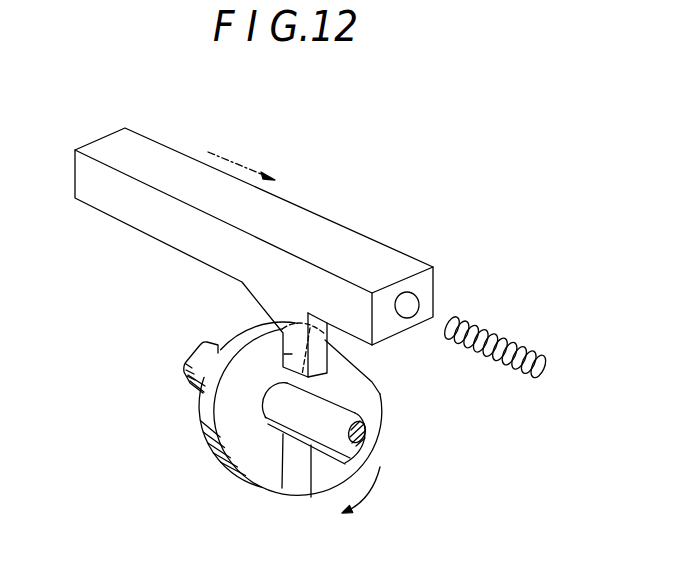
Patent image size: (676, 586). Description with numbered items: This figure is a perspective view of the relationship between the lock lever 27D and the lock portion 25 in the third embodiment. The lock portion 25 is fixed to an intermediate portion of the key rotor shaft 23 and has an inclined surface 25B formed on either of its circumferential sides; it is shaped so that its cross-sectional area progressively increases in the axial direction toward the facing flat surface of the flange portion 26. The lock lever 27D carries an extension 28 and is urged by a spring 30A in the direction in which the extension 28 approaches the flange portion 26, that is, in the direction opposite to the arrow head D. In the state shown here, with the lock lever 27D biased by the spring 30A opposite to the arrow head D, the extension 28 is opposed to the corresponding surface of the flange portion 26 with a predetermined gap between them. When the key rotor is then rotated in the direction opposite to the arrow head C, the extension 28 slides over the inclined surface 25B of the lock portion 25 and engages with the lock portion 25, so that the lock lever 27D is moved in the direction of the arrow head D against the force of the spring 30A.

The lock lever 27D is at (287, 210).
The extension 28 is at (290, 354).
The lock portion 25 is at (372, 438).
The inclined surface 25B is at (352, 392).
The key rotor shaft 23 is at (304, 446).
The flange portion 26 is at (207, 422).
The spring 30A is at (503, 337).
The arrow head D is at (240, 163).
The arrow head C is at (372, 492).